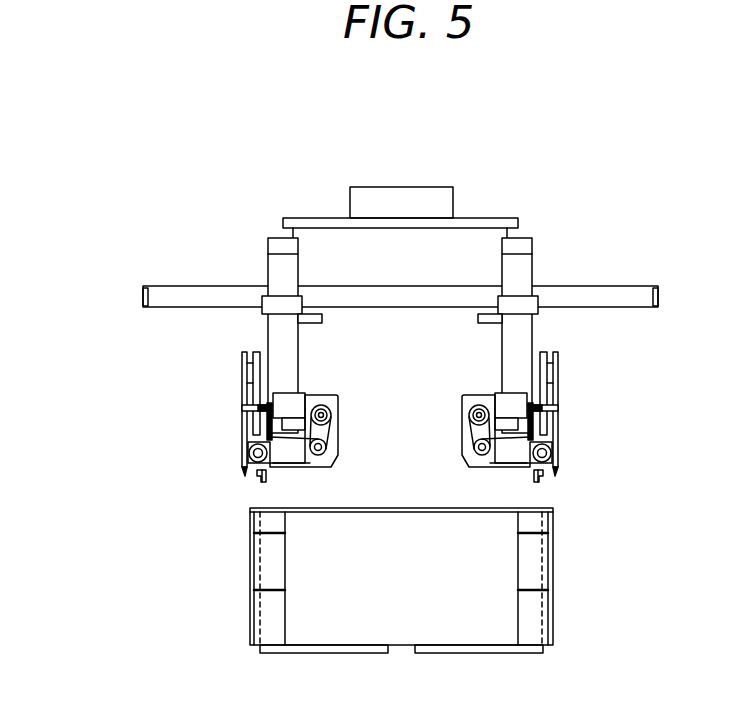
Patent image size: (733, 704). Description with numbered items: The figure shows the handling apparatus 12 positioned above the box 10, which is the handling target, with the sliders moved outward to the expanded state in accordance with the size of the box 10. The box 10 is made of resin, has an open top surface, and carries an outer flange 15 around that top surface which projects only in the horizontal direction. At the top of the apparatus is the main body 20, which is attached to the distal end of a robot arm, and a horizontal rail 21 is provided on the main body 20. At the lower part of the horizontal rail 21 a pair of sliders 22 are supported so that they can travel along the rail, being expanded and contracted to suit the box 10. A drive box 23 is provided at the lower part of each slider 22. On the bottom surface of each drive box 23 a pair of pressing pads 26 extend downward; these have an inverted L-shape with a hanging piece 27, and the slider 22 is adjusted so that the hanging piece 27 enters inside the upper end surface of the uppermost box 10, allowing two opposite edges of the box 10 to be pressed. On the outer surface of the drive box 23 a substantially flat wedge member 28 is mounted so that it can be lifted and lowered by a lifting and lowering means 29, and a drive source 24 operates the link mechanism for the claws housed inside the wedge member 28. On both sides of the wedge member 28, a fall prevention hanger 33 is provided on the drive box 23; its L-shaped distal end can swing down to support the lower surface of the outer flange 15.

The box 10 is at (305, 572).
The handling apparatus 12 is at (494, 186).
The outer flange 15 is at (258, 512).
The main body 20 is at (482, 237).
The horizontal rail 21 is at (609, 296).
The slider 22 is at (285, 338).
The drive box 23 is at (338, 397).
The drive source 24 is at (510, 400).
The pressing pad 26 is at (246, 472).
The hanging piece 27 is at (257, 480).
The wedge member 28 is at (560, 428).
The lifting and lowering means 29 is at (557, 385).
The fall prevention hanger 33 is at (528, 425).